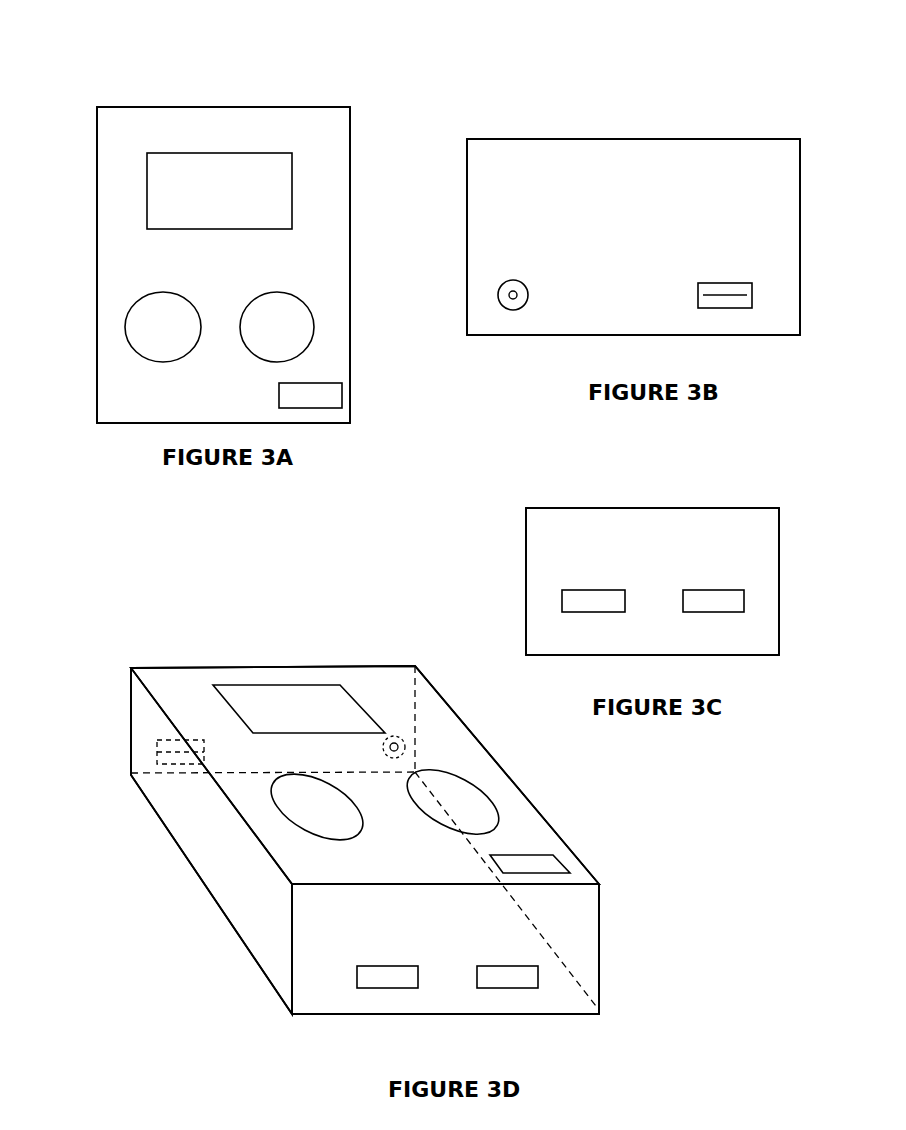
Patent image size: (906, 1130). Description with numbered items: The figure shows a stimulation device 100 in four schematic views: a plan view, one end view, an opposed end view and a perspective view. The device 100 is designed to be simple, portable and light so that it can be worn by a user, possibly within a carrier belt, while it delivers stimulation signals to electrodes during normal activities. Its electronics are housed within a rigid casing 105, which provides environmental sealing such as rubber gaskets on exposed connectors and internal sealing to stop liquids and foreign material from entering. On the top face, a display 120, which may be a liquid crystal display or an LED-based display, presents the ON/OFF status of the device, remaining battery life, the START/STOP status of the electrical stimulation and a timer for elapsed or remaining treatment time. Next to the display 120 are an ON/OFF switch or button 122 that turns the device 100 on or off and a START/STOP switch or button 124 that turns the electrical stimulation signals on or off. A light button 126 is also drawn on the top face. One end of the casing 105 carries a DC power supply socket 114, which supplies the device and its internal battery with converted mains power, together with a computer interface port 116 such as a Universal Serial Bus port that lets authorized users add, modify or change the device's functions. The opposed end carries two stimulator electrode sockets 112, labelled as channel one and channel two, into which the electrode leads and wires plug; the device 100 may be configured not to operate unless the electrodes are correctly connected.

In FIG. 3A, the stimulation device 100 is at (252, 83).
In FIG. 3B, the stimulation device 100 is at (678, 102).
In FIG. 3C, the stimulation device 100 is at (703, 491).
In FIG. 3D, the stimulation device 100 is at (237, 640).
In FIG. 3A, the casing 105 is at (350, 155).
In FIG. 3B, the casing 105 is at (800, 195).
In FIG. 3C, the casing 105 is at (740, 508).
In FIG. 3D, the casing 105 is at (180, 682).
In FIG. 3C, the stimulator electrode sockets 112 is at (708, 607).
In FIG. 3D, the stimulator electrode sockets 112 is at (510, 988).
In FIG. 3B, the DC power supply socket 114 is at (522, 303).
In FIG. 3D, the DC power supply socket 114 is at (407, 747).
In FIG. 3B, the computer interface port 116 is at (725, 309).
In FIG. 3D, the computer interface port 116 is at (157, 752).
In FIG. 3A, the display 120 is at (292, 208).
In FIG. 3D, the display 120 is at (323, 685).
In FIG. 3A, the ON/OFF switch or button 122 is at (125, 333).
In FIG. 3D, the ON/OFF switch or button 122 is at (285, 814).
In FIG. 3A, the START/STOP switch or button 124 is at (297, 296).
In FIG. 3D, the START/STOP switch or button 124 is at (492, 798).
In FIG. 3A, the light button 126 is at (318, 408).
In FIG. 3D, the light button 126 is at (563, 867).